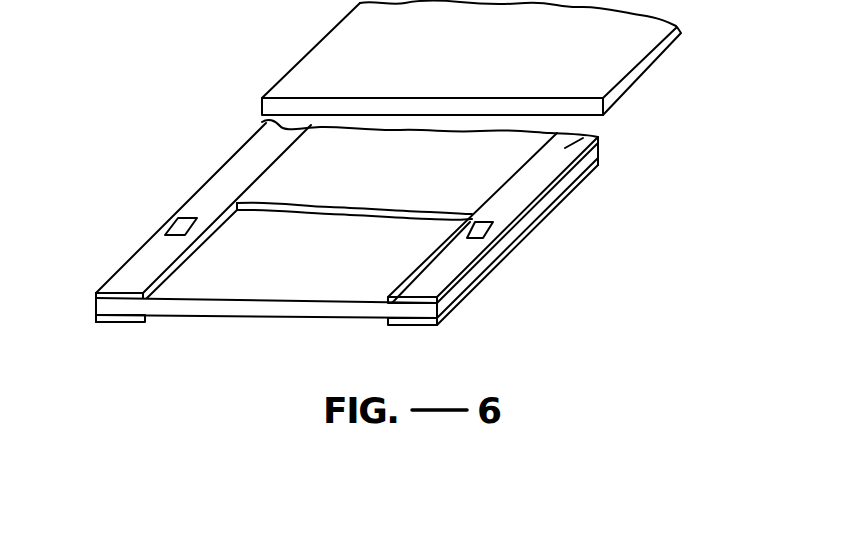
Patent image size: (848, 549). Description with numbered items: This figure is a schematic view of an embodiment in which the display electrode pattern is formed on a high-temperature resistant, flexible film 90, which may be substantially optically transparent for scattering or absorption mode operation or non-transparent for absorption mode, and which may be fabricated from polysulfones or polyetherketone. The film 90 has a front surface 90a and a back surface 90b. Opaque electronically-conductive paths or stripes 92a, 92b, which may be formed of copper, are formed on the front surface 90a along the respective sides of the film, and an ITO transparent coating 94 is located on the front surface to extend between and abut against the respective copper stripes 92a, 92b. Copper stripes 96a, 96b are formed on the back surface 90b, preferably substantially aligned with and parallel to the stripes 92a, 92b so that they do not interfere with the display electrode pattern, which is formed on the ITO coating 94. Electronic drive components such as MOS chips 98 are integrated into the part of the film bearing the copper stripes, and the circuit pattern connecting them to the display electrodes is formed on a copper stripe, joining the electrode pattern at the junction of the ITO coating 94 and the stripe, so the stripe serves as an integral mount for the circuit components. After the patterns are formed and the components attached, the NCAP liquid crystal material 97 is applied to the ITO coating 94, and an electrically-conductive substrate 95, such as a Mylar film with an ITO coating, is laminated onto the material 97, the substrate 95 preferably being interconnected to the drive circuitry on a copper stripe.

The flexible film 90 is at (533, 230).
The front surface 90a is at (226, 301).
The back surface 90b is at (277, 317).
The electronically-conductive stripe 92a is at (247, 162).
The electronically-conductive stripe 92b is at (583, 136).
The ITO transparent coating 94 is at (305, 283).
The electrically-conductive substrate 95 is at (602, 72).
The copper stripe 96a is at (120, 321).
The copper stripe 96b is at (415, 325).
The NCAP liquid crystal material 97 is at (405, 150).
The MOS chips 98 is at (170, 228).